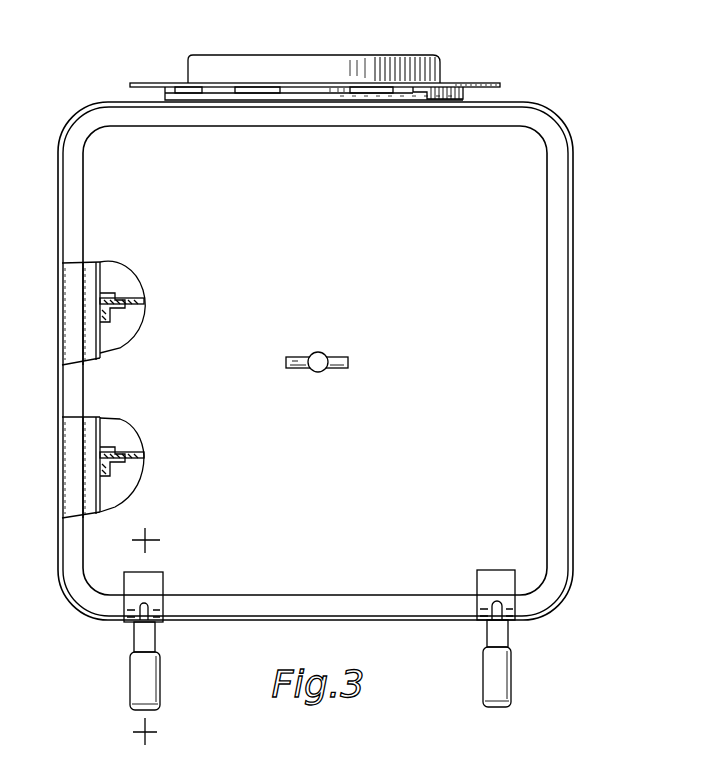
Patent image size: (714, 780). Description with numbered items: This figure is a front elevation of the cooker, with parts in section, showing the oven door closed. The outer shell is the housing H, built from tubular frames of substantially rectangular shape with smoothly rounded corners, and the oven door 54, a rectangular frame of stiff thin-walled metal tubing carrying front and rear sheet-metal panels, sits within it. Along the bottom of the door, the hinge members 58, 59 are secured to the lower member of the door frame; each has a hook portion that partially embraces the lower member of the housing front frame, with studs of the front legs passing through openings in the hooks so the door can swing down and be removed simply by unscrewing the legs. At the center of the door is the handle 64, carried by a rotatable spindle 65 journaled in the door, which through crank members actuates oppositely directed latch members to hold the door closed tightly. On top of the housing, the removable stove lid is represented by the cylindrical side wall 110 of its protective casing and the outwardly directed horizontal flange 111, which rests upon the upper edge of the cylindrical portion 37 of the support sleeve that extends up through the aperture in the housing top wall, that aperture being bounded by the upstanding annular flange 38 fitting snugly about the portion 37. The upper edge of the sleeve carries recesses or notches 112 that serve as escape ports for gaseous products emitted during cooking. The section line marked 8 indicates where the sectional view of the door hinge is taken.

The housing H is at (584, 321).
The oven door 54 is at (530, 470).
The hinge member 58 is at (153, 589).
The hinge member 59 is at (487, 580).
The handle 64 is at (338, 357).
The rotatable spindle 65 is at (318, 352).
The cylindrical side wall 110 is at (234, 64).
The outwardly directed horizontal flange 111 is at (490, 83).
The recesses or notches 112 is at (364, 88).
The cylindrical portion 37 is at (413, 88).
The upstanding annular flange 38 is at (463, 100).
The section line 8- 8 is at (146, 641).